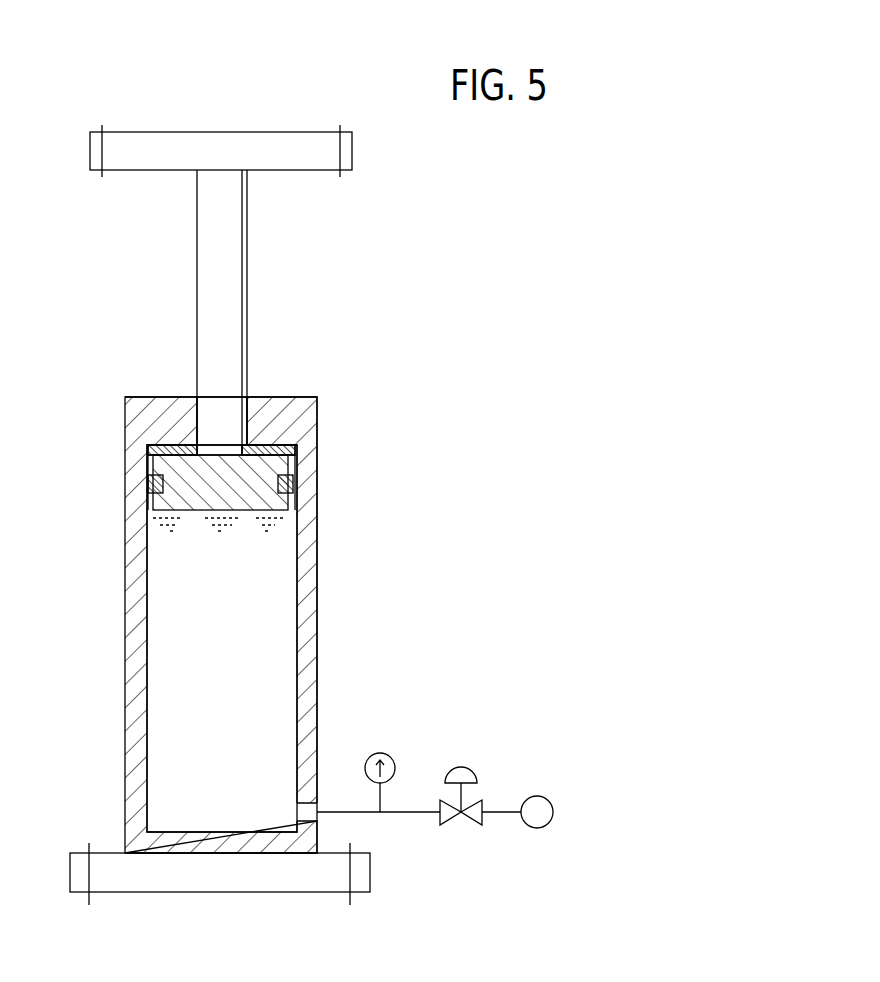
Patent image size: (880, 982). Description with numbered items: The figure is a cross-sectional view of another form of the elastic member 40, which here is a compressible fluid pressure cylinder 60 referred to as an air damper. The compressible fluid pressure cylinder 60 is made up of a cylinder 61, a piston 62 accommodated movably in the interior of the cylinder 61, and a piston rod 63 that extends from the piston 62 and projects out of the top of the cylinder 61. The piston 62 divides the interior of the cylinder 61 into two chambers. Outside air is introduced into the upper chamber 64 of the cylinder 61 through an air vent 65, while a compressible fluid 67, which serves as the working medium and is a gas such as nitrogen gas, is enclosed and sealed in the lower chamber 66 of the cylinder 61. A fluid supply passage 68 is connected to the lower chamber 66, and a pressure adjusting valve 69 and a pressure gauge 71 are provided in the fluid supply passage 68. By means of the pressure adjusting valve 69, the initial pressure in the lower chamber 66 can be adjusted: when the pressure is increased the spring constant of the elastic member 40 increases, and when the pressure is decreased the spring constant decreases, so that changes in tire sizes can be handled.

The elastic member 40 is at (398, 326).
The compressible fluid pressure cylinder 60 is at (320, 553).
The cylinder 61 is at (123, 675).
The piston 62 is at (248, 512).
The piston rod 63 is at (222, 277).
The upper chamber 64 is at (317, 453).
The air vent 65 is at (148, 456).
The lower chamber 66 is at (255, 634).
The compressible fluid 67 is at (222, 530).
The fluid supply passage 68 is at (497, 808).
The pressure adjusting valve 69 is at (475, 822).
The pressure gauge 71 is at (380, 752).